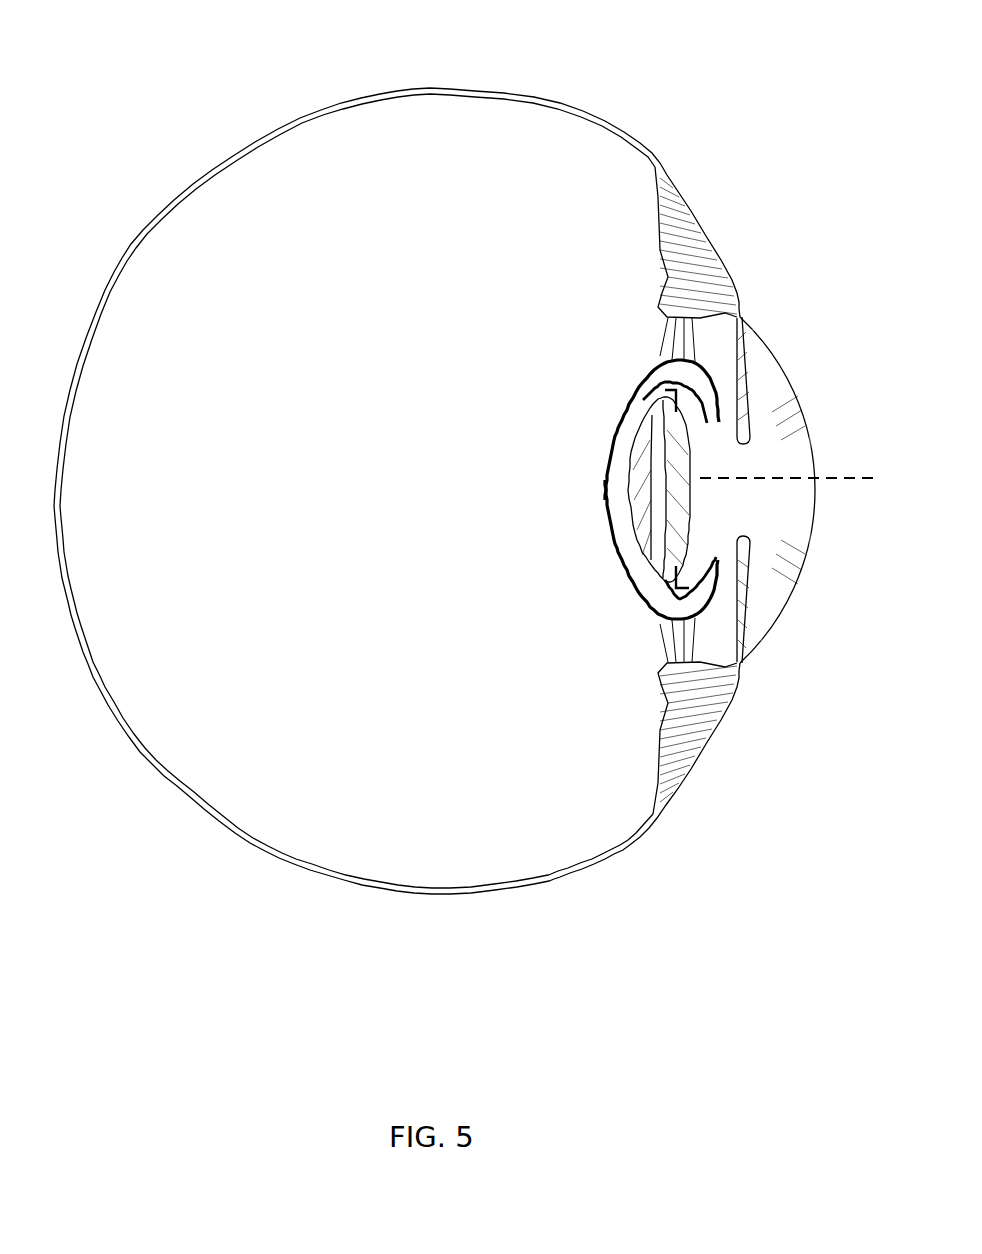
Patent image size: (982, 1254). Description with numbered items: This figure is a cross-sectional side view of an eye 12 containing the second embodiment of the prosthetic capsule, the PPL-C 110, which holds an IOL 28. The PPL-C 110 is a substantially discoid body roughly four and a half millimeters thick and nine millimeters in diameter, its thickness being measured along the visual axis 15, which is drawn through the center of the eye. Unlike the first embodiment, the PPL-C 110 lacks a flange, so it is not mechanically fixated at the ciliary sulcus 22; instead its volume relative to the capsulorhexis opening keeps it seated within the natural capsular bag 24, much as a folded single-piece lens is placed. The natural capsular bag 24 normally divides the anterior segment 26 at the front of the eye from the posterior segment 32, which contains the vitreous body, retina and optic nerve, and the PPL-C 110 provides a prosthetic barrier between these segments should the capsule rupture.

The eye 12 is at (648, 150).
The visual axis 15 is at (828, 479).
The ciliary sulcus 22 is at (727, 602).
The natural capsular bag 24 is at (627, 575).
The anterior segment 26 is at (818, 247).
The IOL 28 is at (690, 479).
The posterior segment 32 is at (741, 941).
The PPL-C 110 is at (650, 407).